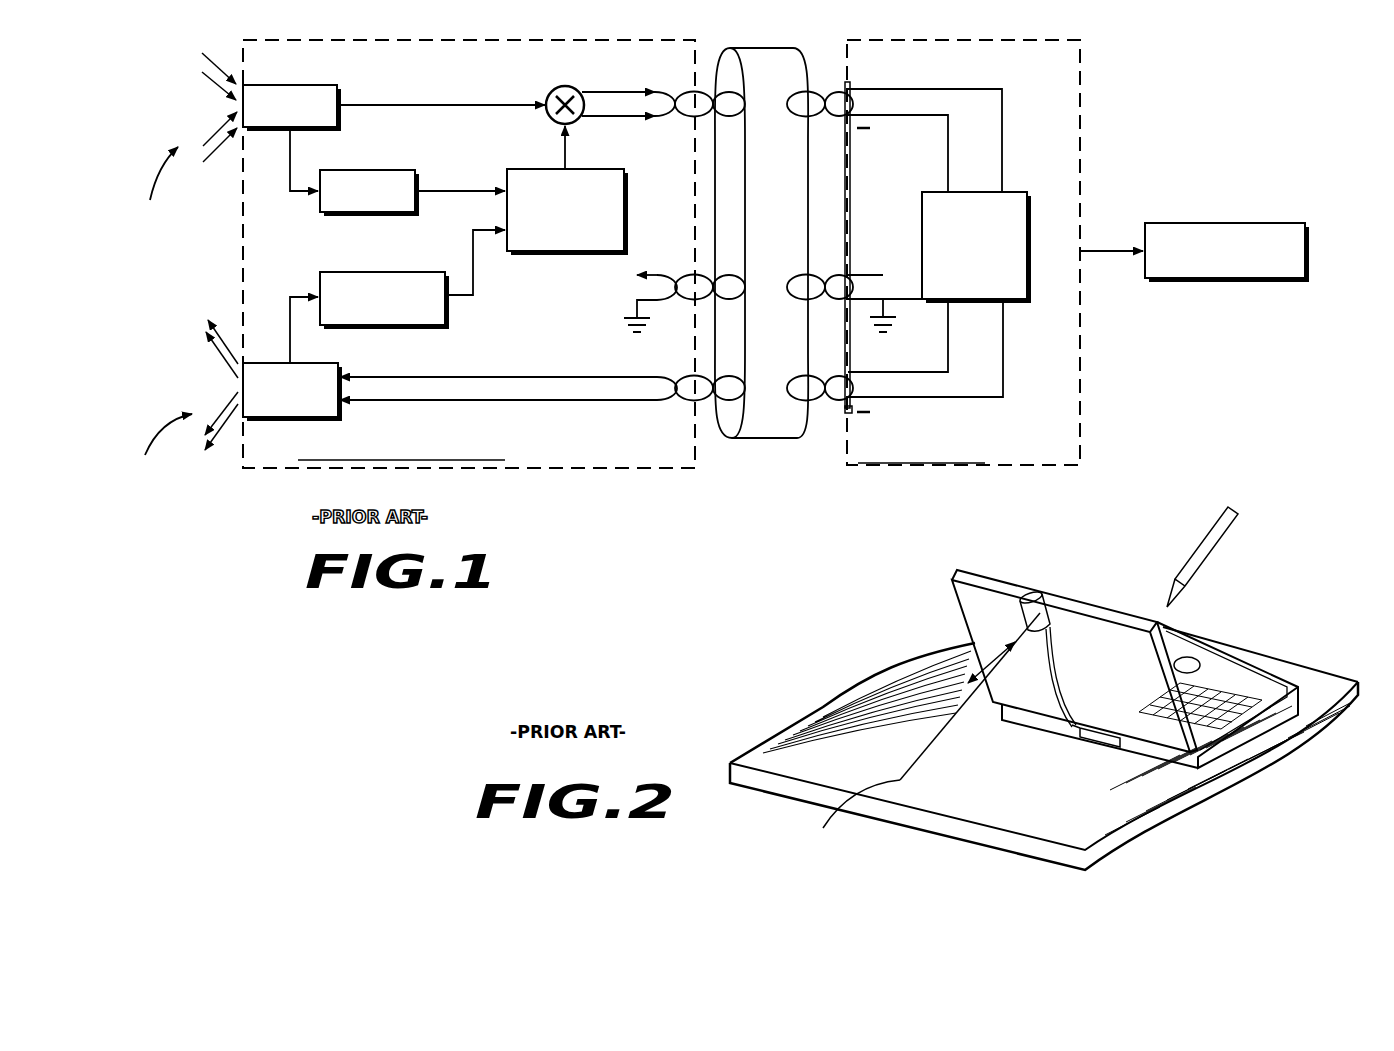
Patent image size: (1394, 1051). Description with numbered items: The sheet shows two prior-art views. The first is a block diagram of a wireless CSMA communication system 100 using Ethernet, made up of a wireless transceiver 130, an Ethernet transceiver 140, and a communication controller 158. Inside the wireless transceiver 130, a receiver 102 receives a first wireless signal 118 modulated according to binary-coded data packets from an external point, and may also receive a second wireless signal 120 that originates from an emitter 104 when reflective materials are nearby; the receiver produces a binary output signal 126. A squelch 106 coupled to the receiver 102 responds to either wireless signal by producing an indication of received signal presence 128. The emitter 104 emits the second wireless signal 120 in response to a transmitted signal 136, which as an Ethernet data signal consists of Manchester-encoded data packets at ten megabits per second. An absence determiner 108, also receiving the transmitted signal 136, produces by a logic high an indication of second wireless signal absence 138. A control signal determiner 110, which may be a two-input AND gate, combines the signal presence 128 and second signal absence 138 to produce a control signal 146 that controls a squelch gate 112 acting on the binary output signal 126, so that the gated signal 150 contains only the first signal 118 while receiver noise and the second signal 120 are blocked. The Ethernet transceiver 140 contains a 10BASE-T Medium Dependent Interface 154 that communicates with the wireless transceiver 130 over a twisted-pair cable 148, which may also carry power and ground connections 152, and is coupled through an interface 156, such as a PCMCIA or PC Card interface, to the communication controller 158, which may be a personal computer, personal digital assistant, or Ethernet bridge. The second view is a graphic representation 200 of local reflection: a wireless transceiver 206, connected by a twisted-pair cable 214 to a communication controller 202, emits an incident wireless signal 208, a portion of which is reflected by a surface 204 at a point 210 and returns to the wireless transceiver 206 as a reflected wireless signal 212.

In FIG. 1, the wireless CSMA communication system 100 is at (470, 527).
In FIG. 1, the receiver 102 is at (288, 84).
In FIG. 1, the emitter 104 is at (338, 363).
In FIG. 1, the squelch 106 is at (368, 169).
In FIG. 1, the absence determiner 108 is at (378, 271).
In FIG. 1, the control signal determiner 110 is at (567, 256).
In FIG. 1, the squelch gate 112 is at (557, 86).
In FIG. 1, the first wireless signal 118 is at (208, 76).
In FIG. 1, the second wireless signal 120 is at (177, 312).
In FIG. 1, the binary output signal 126 is at (420, 102).
In FIG. 1, the indication of received signal presence 128 is at (462, 187).
In FIG. 1, the wireless transceiver 130 is at (243, 257).
In FIG. 1, the transmitted signal 136 is at (653, 403).
In FIG. 1, the indication of second wireless signal absence 138 is at (475, 296).
In FIG. 1, the Ethernet transceiver 140 is at (1080, 72).
In FIG. 1, the control signal 146 is at (567, 145).
In FIG. 1, the twisted-pair cable 148 is at (767, 438).
In FIG. 1, the gated signal 150 is at (665, 90).
In FIG. 1, the power and ground connections 152 is at (688, 273).
In FIG. 1, the 10BASE-T Medium Dependent Interface 154 is at (1031, 300).
In FIG. 1, the interface 156 is at (1105, 247).
In FIG. 1, the communication controller 158 is at (1222, 222).
In FIG. 2, the graphic representation of local reflection 200 is at (680, 739).
In FIG. 2, the communication controller 202 is at (1265, 687).
In FIG. 2, the surface 204 is at (827, 740).
In FIG. 2, the wireless transceiver 206 is at (1025, 598).
In FIG. 2, the incident wireless signal 208 is at (941, 730).
In FIG. 2, the point 210 is at (847, 815).
In FIG. 2, the reflected wireless signal 212 is at (955, 712).
In FIG. 2, the twisted-pair cable 214 is at (1058, 736).